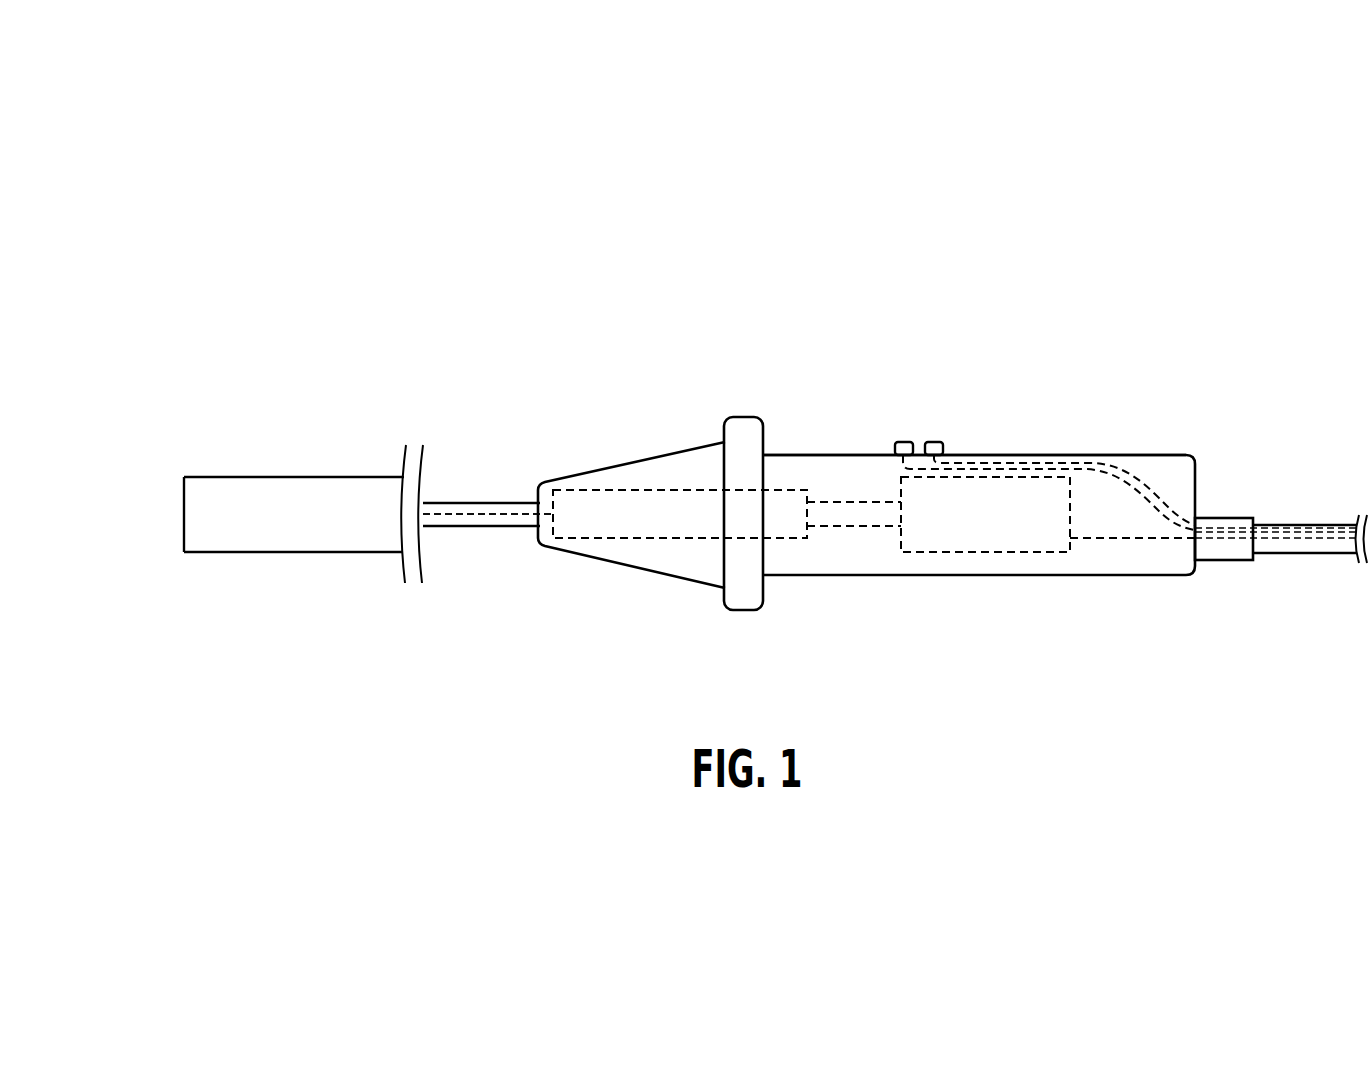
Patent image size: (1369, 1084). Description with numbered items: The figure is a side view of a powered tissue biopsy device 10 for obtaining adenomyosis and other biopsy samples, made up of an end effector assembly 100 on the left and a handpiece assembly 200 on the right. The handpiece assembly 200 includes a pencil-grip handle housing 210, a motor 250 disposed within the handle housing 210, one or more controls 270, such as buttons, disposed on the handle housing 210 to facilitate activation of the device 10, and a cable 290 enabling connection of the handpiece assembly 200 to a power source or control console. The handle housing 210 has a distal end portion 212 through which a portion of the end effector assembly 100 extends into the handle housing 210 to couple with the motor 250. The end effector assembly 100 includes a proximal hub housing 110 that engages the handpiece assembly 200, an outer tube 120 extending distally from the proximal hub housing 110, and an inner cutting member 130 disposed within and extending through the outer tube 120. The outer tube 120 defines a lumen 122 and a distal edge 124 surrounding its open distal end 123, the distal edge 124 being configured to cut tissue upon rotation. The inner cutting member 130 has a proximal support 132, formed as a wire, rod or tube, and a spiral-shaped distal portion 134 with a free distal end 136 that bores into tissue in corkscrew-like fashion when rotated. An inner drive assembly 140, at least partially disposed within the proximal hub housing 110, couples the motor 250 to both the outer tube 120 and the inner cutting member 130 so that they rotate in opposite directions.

The device 10 is at (776, 238).
The end effector assembly 100 is at (755, 350).
The proximal hub housing 110 is at (697, 582).
The outer tube 120 is at (480, 528).
The lumen 122 is at (362, 537).
The open distal end 123 is at (247, 477).
The distal edge 124 is at (184, 548).
The inner cutting member 130 is at (342, 512).
The proximal support 132 is at (502, 513).
The spiral-shaped distal portion 134 is at (138, 452).
The free distal end 136 is at (128, 494).
The inner drive assembly 140 is at (603, 522).
The handpiece assembly 200 is at (780, 350).
The handle housing 210 is at (858, 575).
The distal end portion 212 is at (807, 455).
The motor 250 is at (988, 542).
The controls 270 is at (933, 440).
The cable 290 is at (1317, 554).